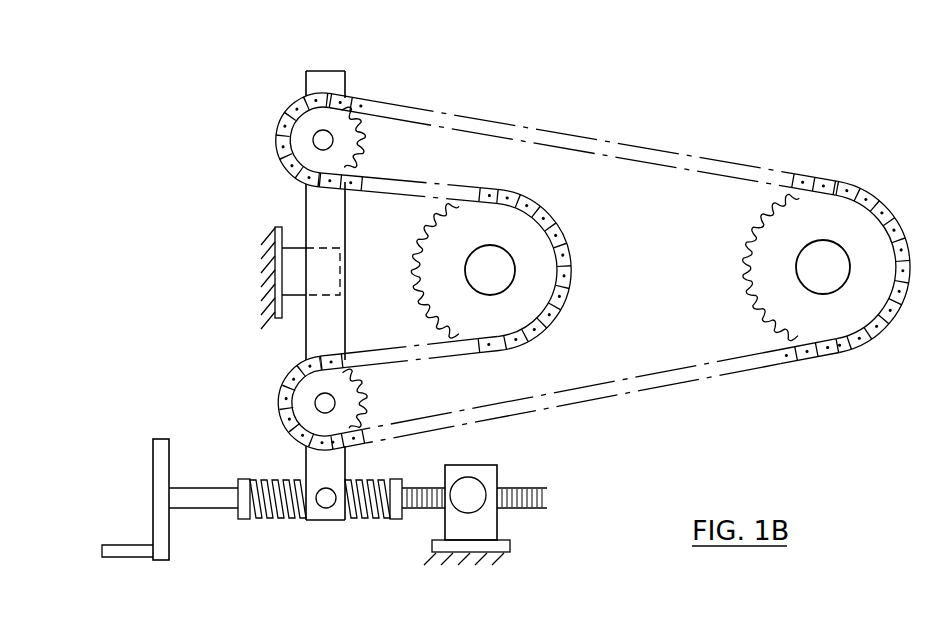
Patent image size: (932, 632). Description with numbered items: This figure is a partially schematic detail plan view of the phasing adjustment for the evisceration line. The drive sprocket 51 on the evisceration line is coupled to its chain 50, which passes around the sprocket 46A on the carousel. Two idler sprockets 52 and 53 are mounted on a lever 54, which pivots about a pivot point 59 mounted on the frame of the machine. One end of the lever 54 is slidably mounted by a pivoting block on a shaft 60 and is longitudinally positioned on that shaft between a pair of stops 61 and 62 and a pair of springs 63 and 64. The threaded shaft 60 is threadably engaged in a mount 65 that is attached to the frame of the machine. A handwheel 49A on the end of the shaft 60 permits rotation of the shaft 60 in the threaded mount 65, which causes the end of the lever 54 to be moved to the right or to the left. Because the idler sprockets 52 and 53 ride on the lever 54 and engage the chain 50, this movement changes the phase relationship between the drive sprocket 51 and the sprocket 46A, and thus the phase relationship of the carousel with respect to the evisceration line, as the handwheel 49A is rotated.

The sprocket 46A is at (765, 285).
The handwheel 49A is at (155, 488).
The chain 50 is at (660, 372).
The drive sprocket 51 is at (555, 270).
The idler sprocket 52 is at (300, 142).
The idler sprocket 53 is at (300, 392).
The lever 54 is at (346, 215).
The pivot point 59 is at (323, 271).
The threaded shaft 60 is at (203, 497).
The stop 61 is at (243, 513).
The stop 62 is at (398, 510).
The spring 63 is at (275, 515).
The spring 64 is at (362, 517).
The threaded mount 65 is at (498, 472).